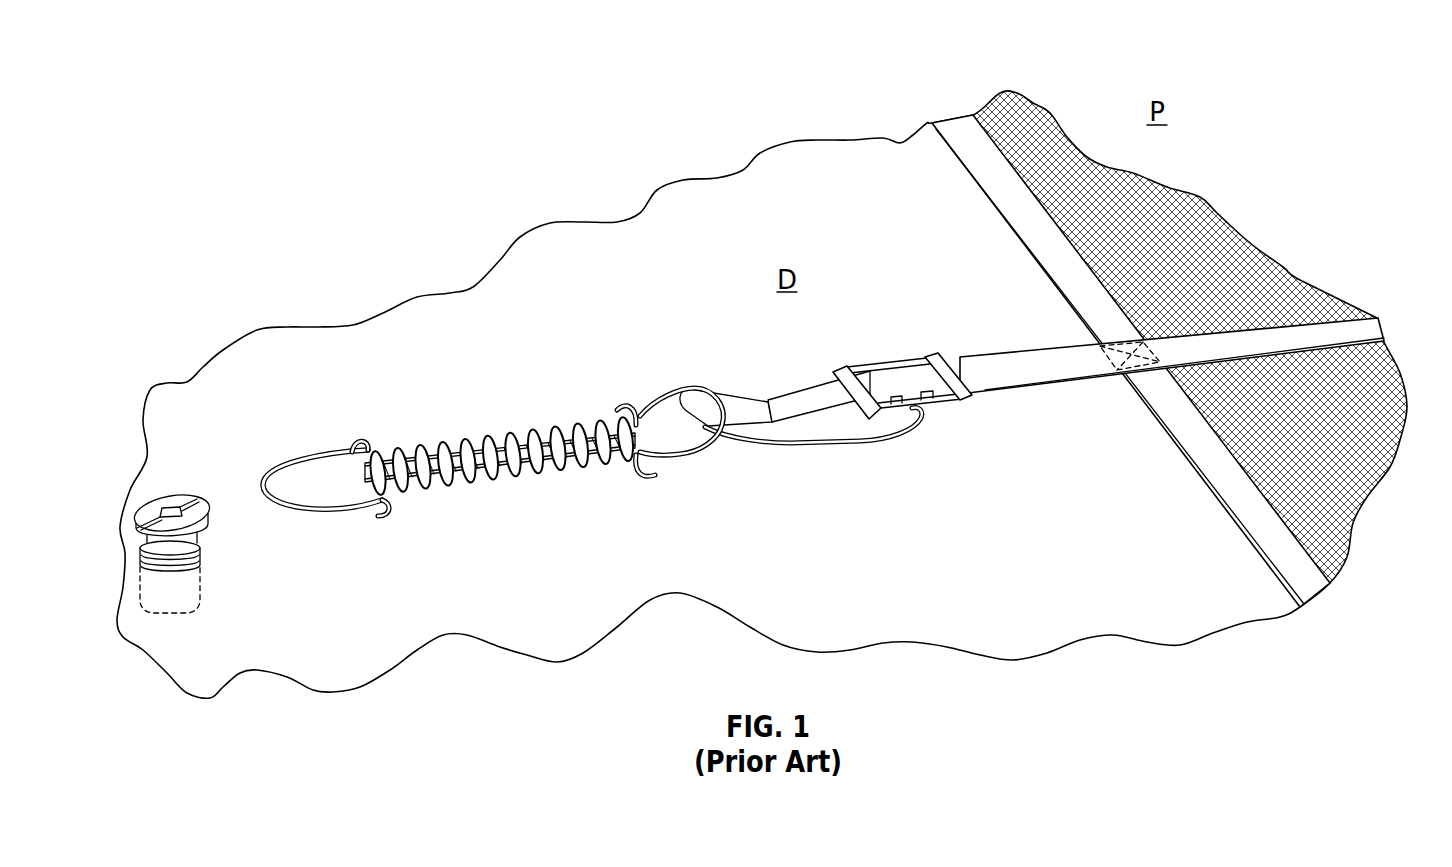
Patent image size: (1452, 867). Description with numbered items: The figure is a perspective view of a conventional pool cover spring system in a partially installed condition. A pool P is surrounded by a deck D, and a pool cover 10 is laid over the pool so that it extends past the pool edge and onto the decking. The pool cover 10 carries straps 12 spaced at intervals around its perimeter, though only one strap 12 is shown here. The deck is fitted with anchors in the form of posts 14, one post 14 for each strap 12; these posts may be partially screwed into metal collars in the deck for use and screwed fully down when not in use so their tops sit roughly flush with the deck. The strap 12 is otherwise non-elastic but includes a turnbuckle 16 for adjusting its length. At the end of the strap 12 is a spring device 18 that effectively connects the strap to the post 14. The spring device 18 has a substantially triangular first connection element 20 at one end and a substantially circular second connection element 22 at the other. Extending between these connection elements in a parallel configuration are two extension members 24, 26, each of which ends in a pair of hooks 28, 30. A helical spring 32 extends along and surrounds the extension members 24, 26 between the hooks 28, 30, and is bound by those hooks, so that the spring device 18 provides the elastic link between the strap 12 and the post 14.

The pool cover 10 is at (1250, 250).
The strap 12 is at (1007, 363).
The post 14 is at (175, 498).
The turnbuckle 16 is at (947, 403).
The spring device 18 is at (513, 448).
The first connection element 20 is at (692, 457).
The second connection element 22 is at (288, 463).
The extension member 24 is at (420, 497).
The extension member 26 is at (437, 447).
The hook 28 is at (620, 400).
The hook 30 is at (640, 480).
The helical spring 32 is at (513, 437).